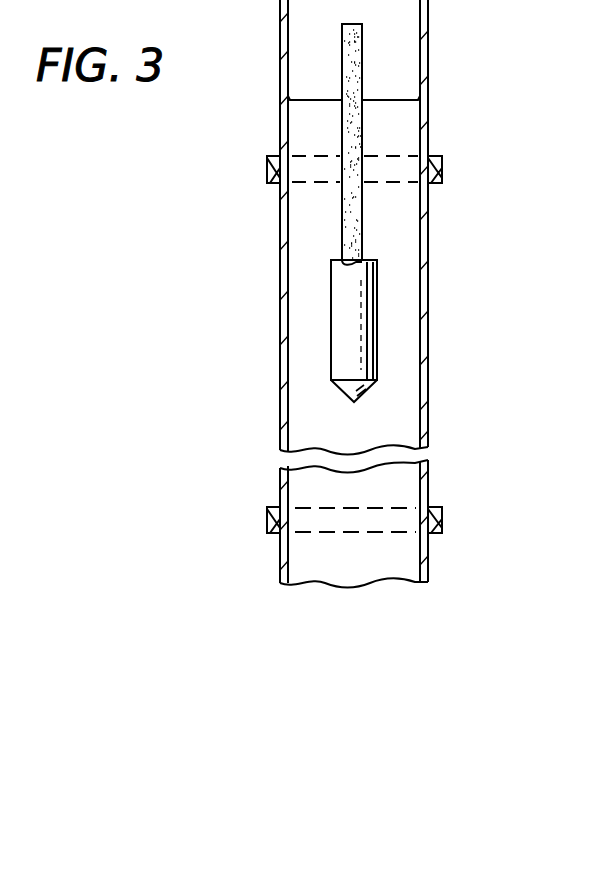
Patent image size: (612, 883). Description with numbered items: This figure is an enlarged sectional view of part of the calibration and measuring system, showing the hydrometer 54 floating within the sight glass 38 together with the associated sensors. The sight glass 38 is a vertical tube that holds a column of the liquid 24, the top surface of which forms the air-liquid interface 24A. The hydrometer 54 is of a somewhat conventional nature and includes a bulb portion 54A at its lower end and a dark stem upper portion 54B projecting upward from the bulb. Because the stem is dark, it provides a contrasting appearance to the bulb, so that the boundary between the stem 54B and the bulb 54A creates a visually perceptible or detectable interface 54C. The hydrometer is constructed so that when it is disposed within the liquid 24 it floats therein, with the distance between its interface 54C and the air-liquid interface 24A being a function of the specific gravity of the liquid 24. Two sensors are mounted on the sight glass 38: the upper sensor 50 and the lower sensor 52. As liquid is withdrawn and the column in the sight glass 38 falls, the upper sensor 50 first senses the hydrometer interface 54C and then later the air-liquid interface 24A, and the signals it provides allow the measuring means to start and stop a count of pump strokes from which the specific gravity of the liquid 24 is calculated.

The liquid 24 is at (415, 250).
The air-liquid interface 24A is at (405, 100).
The sight glass 38 is at (428, 43).
The upper sensor 50 is at (442, 162).
The sensor 52 is at (442, 520).
The hydrometer 54 is at (374, 338).
The bulb portion 54A is at (362, 393).
The dark stem upper portion 54B is at (362, 219).
The detectable interface 54C is at (362, 262).